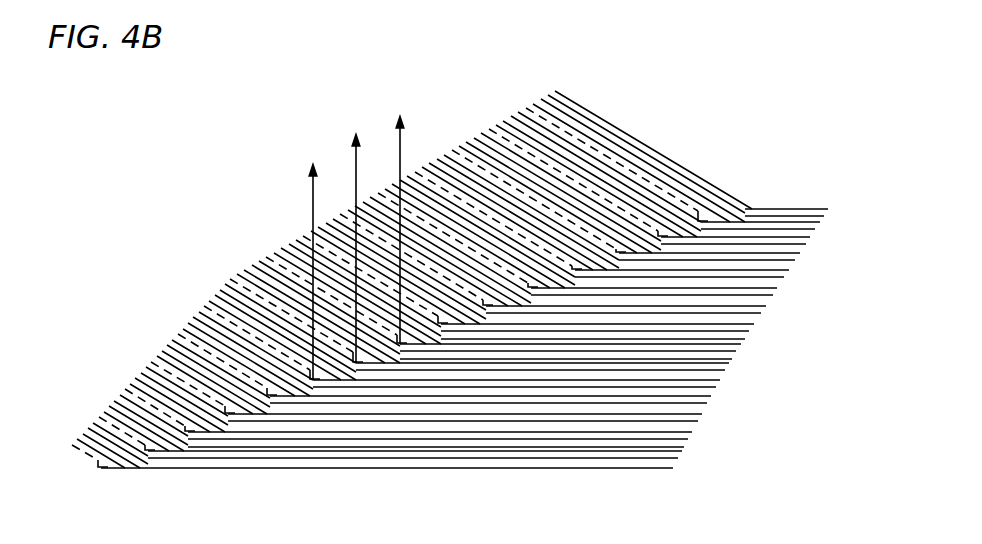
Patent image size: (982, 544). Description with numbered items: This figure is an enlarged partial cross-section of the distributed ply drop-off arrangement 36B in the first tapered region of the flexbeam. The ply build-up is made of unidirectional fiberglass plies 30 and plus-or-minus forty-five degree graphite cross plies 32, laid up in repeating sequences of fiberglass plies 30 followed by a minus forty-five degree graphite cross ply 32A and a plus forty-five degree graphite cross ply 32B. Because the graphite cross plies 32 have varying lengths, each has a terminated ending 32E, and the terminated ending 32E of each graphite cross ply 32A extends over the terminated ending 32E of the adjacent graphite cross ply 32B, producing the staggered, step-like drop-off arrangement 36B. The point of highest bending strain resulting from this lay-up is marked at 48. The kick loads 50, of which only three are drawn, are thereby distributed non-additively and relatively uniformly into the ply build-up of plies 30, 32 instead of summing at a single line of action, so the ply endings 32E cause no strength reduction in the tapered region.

The unidirectional fiberglass plies 30 is at (648, 142).
The graphite cross plies 32 is at (158, 196).
The −45° graphite cross ply 32A is at (221, 262).
The +45° graphite cross ply 32B is at (225, 268).
The terminated ply endings 32E is at (624, 245).
The distributed ply drop-off arrangement 36B is at (448, 336).
The point of highest bending strain 48 is at (741, 200).
The kick loads 50 is at (303, 183).